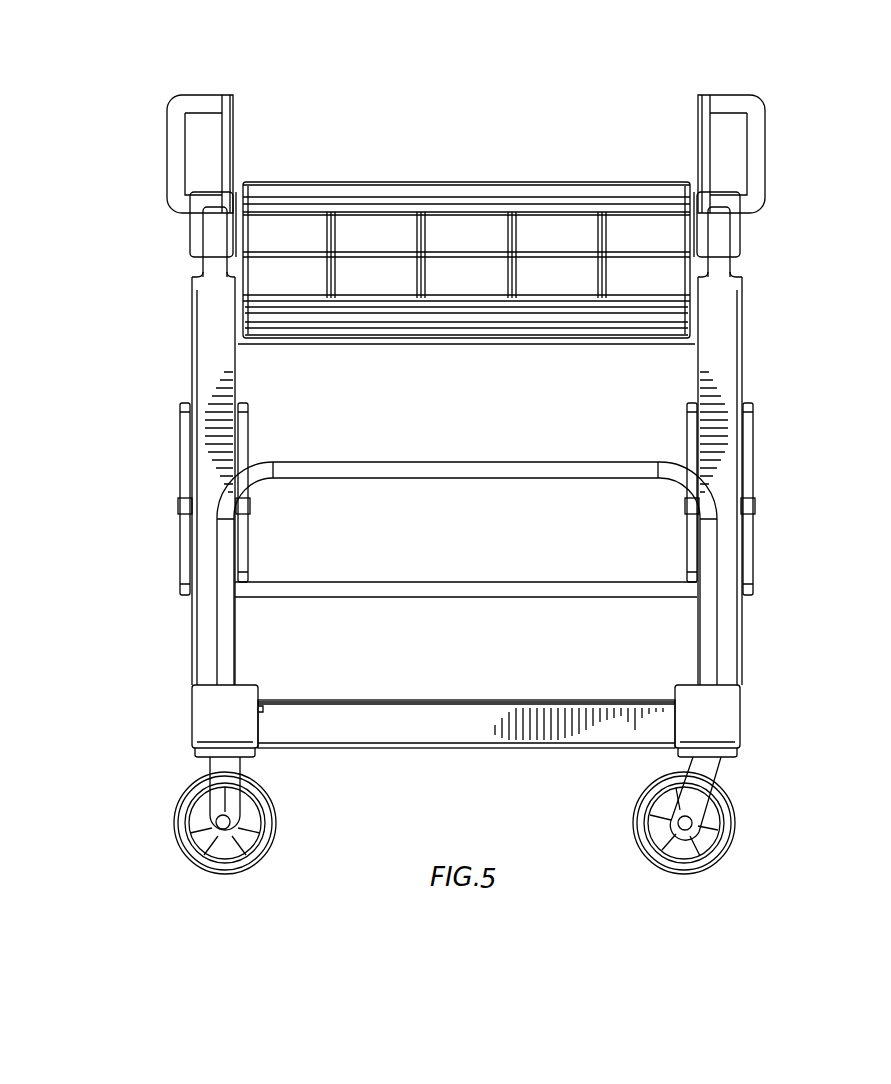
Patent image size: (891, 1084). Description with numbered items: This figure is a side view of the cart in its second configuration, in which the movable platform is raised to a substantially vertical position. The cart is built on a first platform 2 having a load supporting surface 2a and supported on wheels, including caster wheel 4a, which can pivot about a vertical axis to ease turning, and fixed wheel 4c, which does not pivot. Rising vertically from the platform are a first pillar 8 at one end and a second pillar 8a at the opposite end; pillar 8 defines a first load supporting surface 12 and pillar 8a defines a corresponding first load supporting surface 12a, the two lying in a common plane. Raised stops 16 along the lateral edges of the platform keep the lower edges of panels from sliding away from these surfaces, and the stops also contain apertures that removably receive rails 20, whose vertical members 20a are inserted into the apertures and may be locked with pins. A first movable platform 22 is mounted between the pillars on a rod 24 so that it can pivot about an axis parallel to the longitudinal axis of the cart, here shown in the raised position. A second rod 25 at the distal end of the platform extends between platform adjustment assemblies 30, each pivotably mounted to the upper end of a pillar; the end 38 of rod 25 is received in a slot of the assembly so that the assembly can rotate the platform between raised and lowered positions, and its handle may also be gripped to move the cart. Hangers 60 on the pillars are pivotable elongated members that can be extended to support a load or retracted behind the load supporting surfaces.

The first platform 2 is at (497, 730).
The load supporting surface 2a is at (460, 700).
The caster wheel 4a is at (736, 851).
The fixed wheel 4c is at (276, 846).
The first pillar 8 is at (742, 379).
The second pillar 8a is at (193, 356).
The first load supporting surface 12 is at (734, 336).
The first load supporting surface 12a is at (210, 292).
The raised stop 16 is at (258, 690).
The rail 20 is at (558, 455).
The vertical member 20a is at (222, 657).
The first movable platform 22 is at (470, 222).
The rod 24 is at (315, 322).
The second rod 25 is at (608, 200).
The platform adjustment assembly 30 is at (150, 186).
The end of second rod 38 is at (244, 186).
The hanger 60 is at (180, 458).